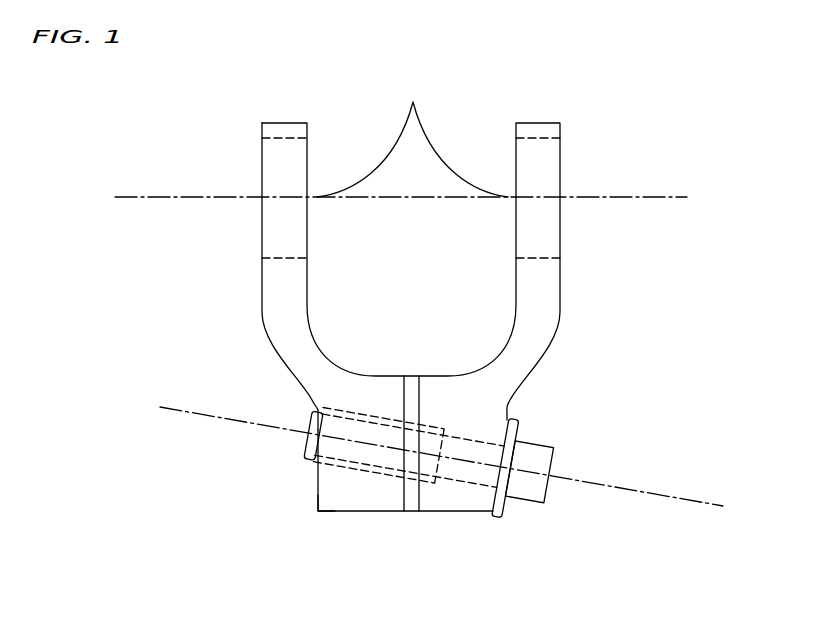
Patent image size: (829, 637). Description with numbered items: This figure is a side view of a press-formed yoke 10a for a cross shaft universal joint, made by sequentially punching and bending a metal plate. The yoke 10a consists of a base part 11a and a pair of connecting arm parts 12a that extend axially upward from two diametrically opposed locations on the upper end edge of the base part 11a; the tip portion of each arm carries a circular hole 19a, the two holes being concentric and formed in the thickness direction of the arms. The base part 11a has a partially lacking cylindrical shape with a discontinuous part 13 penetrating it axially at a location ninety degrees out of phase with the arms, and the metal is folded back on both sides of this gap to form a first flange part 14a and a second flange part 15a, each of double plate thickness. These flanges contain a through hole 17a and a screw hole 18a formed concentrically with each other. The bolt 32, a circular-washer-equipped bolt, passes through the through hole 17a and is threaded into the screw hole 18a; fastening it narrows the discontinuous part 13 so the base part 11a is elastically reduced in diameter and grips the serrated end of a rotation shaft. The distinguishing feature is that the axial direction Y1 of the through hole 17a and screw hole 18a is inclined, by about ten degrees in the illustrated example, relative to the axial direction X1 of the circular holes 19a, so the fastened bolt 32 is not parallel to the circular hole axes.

The yoke 10a is at (578, 152).
The connecting arm part 12a is at (431, 98).
The axial direction of the paired circular holes X1 is at (672, 197).
The circular hole 19a is at (276, 250).
The first flange part 14a is at (470, 399).
The base part 11a is at (328, 486).
The second flange part 15a is at (328, 500).
The discontinuous part 13 is at (407, 499).
The axial direction of the through hole and screw hole Y1 is at (640, 490).
The screw hole 18a is at (368, 466).
The through hole 17a is at (466, 477).
The bolt 32 is at (538, 487).